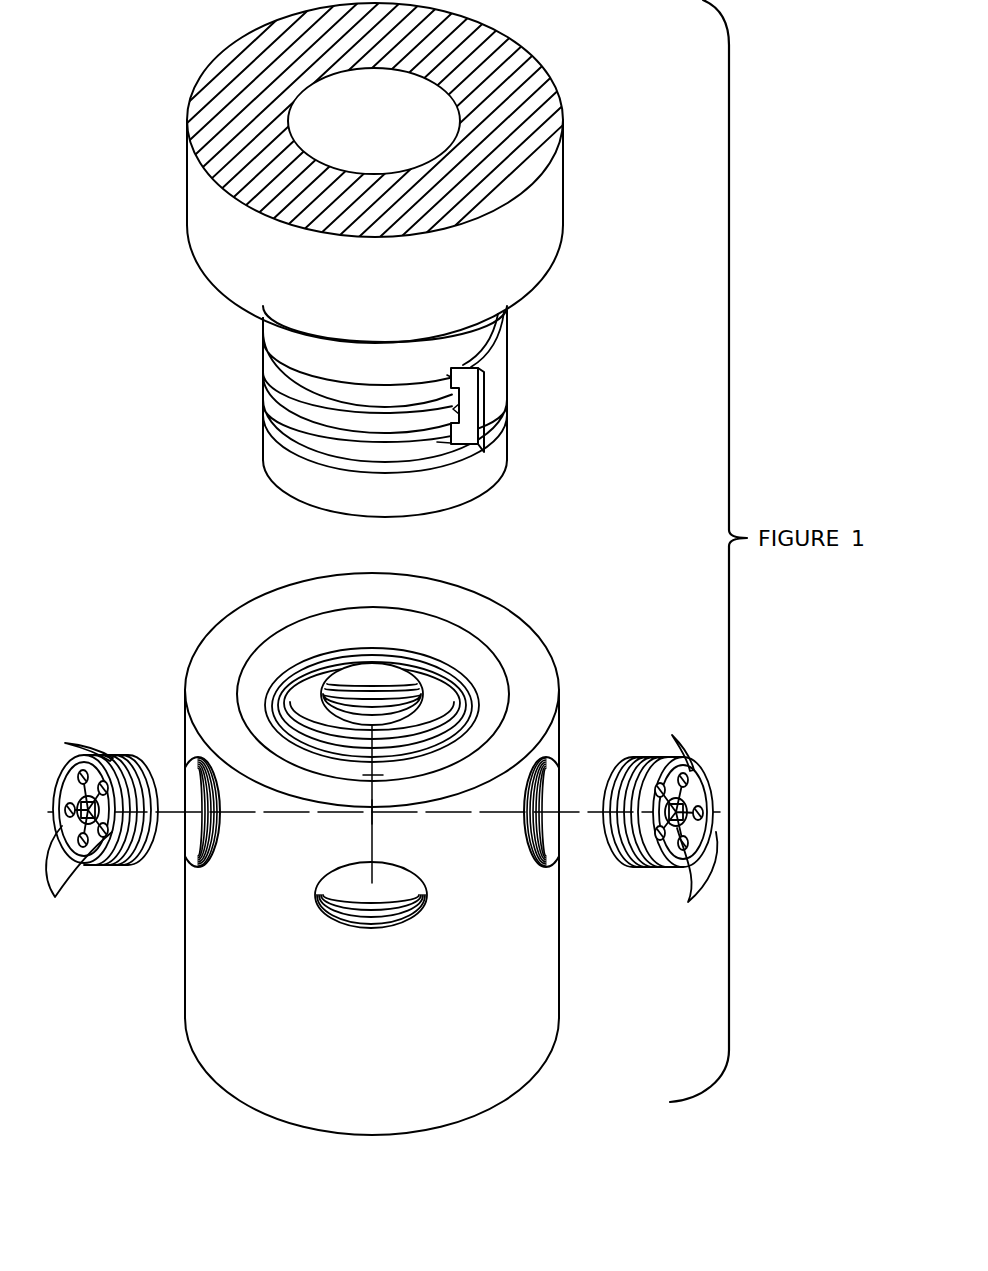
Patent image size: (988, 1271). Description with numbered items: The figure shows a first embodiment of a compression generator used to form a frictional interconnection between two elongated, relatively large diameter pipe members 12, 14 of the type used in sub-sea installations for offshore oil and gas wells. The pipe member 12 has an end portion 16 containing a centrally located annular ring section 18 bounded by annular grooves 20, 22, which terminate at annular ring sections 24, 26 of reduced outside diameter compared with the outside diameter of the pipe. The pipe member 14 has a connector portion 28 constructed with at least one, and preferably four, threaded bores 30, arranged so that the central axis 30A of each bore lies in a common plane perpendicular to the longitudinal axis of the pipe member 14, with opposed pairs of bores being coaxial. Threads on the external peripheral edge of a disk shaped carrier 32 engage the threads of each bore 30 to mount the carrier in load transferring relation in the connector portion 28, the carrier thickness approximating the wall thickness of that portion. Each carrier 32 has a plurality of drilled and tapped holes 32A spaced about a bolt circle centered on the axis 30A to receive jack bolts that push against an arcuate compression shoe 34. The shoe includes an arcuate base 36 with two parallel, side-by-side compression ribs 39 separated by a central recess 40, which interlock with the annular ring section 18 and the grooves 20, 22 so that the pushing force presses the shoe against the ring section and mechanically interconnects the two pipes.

The pipe member 12 is at (563, 173).
The pipe member 14 is at (183, 990).
The end portion 16 is at (560, 297).
The annular ring section 18 is at (283, 400).
The annular groove 20 is at (287, 368).
The annular groove 22 is at (298, 432).
The annular ring section 24 is at (262, 328).
The annular ring section 26 is at (290, 475).
The connector portion 28 is at (565, 697).
The threaded bore 30 is at (388, 672).
The central axis 30A is at (378, 862).
The disk shaped carrier 32 is at (710, 790).
The drilled and tapped holes 32A is at (376, 823).
The arcuate compression shoe 34 is at (509, 346).
The arcuate base 36 is at (484, 452).
The compression ribs 39 is at (449, 376).
The central recess 40 is at (457, 411).